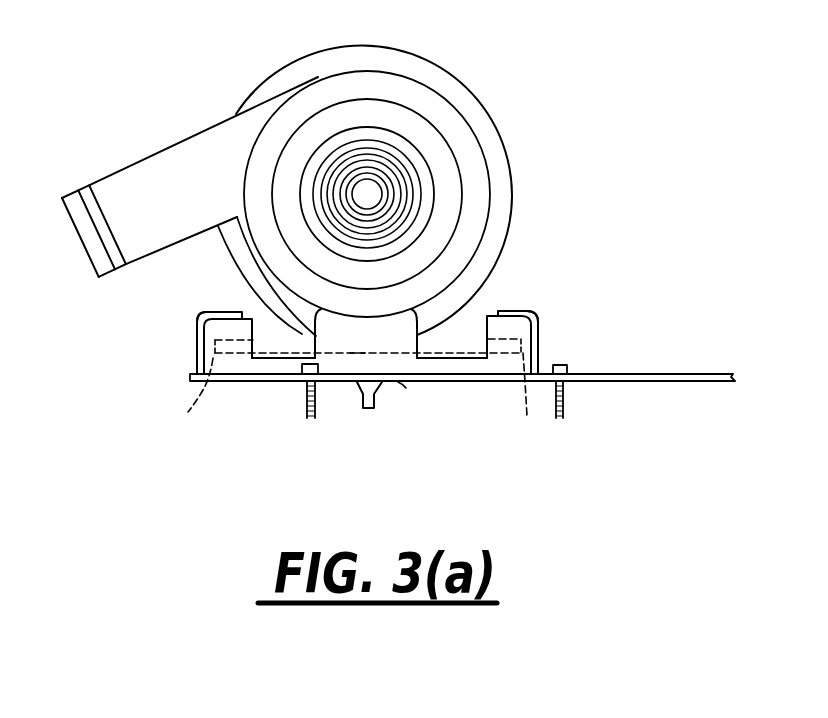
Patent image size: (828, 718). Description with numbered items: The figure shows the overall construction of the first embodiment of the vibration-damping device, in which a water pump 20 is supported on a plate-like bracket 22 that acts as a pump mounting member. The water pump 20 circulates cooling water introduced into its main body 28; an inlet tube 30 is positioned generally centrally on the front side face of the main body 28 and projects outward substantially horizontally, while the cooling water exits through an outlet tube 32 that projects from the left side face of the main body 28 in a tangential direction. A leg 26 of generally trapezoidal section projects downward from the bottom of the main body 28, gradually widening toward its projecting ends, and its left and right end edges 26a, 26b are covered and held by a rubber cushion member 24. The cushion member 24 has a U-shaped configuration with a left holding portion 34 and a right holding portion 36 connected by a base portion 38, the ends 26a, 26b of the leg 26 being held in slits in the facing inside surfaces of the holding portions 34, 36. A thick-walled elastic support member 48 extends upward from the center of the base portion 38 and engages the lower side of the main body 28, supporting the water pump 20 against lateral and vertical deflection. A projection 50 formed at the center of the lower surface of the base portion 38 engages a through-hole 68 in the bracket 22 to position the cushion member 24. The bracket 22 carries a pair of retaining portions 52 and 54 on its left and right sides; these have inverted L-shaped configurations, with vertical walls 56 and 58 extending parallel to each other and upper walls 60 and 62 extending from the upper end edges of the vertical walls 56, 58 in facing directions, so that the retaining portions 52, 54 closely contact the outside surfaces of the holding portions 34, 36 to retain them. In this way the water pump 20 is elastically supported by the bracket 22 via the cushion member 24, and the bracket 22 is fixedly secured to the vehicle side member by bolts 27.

The water pump 20 is at (276, 70).
The bracket 22 is at (606, 386).
The cushion member 24 is at (458, 362).
The leg 26 is at (276, 316).
The end edge of leg 26a is at (186, 410).
The end edge of leg 26b is at (528, 420).
The bolts 27 is at (302, 424).
The main body 28 is at (490, 92).
The inlet tube 30 is at (384, 191).
The outlet tube 32 is at (126, 167).
The left holding portion 34 is at (205, 340).
The right holding portion 36 is at (548, 321).
The base portion 38 is at (292, 370).
The elastic support member 48 is at (356, 338).
The projection 50 is at (378, 394).
The retaining portion 52 is at (196, 322).
The retaining portion 54 is at (552, 300).
The vertical wall 56 is at (198, 372).
The vertical wall 58 is at (556, 348).
The upper wall 60 is at (222, 311).
The upper wall 62 is at (540, 304).
The through-hole 68 is at (400, 388).